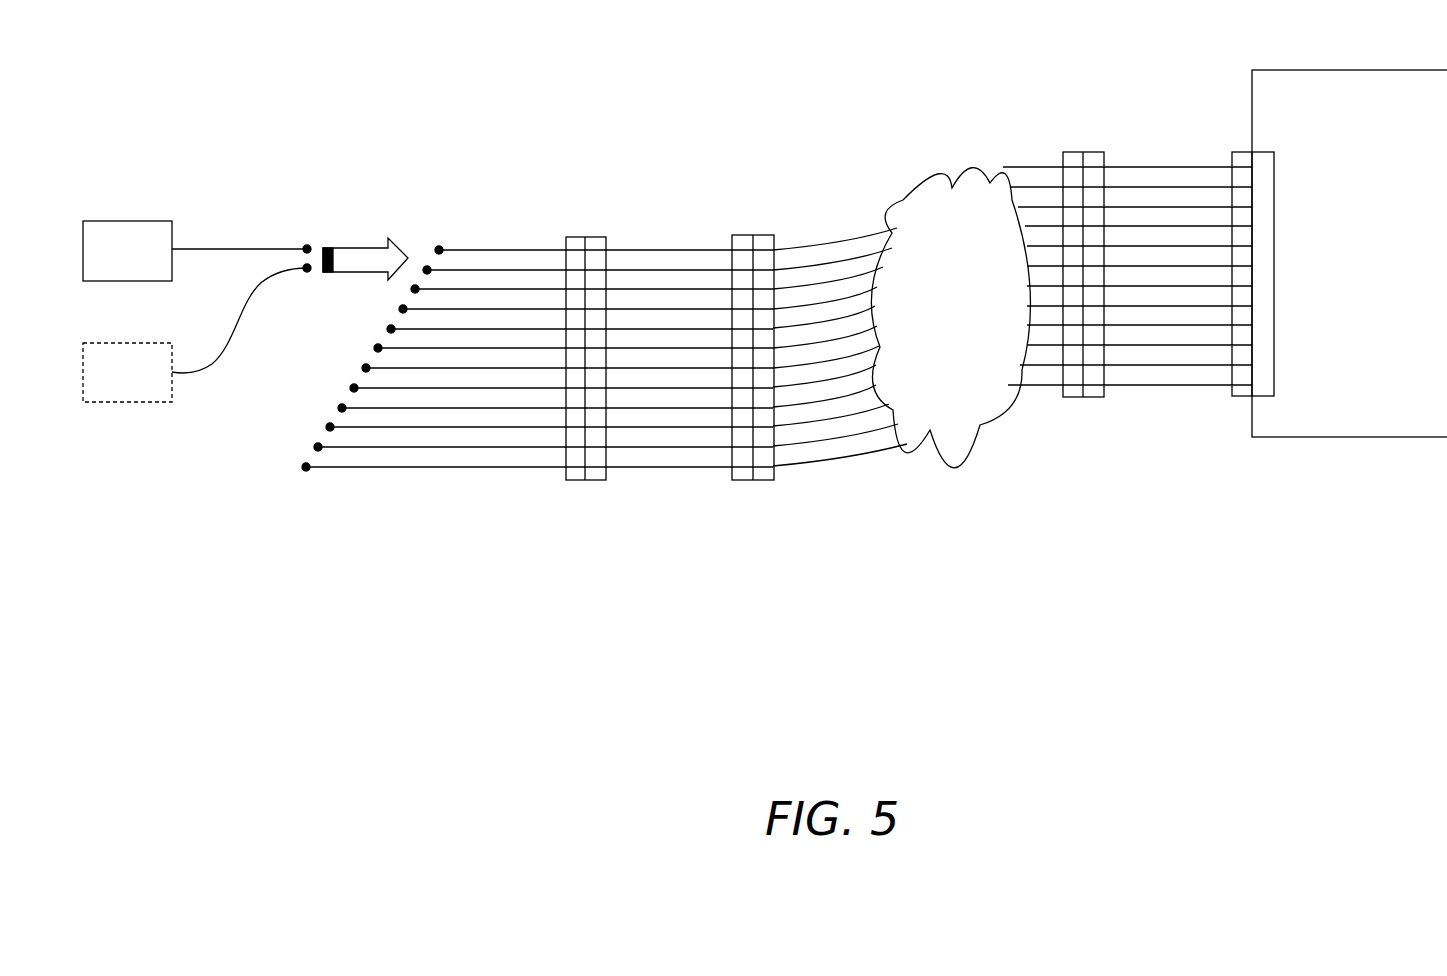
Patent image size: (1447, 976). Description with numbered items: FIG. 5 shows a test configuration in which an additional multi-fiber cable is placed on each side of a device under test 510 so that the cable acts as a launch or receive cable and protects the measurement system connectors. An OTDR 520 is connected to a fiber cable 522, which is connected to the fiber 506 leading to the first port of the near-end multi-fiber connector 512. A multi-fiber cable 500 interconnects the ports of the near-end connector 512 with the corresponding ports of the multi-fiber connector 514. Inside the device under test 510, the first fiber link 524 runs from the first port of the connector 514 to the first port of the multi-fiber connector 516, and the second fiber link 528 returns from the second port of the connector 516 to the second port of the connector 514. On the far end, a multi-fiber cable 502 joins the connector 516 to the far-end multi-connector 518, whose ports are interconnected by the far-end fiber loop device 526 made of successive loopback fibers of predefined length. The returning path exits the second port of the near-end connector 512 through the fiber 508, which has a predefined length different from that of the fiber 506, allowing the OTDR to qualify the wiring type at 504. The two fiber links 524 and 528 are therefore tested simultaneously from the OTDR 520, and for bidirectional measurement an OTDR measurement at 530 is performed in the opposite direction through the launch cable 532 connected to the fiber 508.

The multi-fiber cable 500 is at (642, 246).
The multi-fiber cable 502 is at (1165, 160).
The wiring type 504 is at (407, 470).
The fiber 506 is at (462, 247).
The fiber 508 is at (503, 260).
The device under test 510 is at (960, 465).
The multi-fiber connector A0 512 is at (588, 228).
The multi-fiber connector A 514 is at (665, 178).
The multi-fiber connector B 516 is at (1073, 147).
The multi-fiber connector B0 518 is at (1250, 150).
The OTDR 520 is at (118, 217).
The fiber cable 522 is at (213, 242).
The first fiber link 524 is at (800, 245).
The far-end fiber loop device 526 is at (1328, 66).
The second fiber link 528 is at (855, 253).
The OTDR measurement 530 is at (117, 338).
The launch cable 532 is at (202, 370).